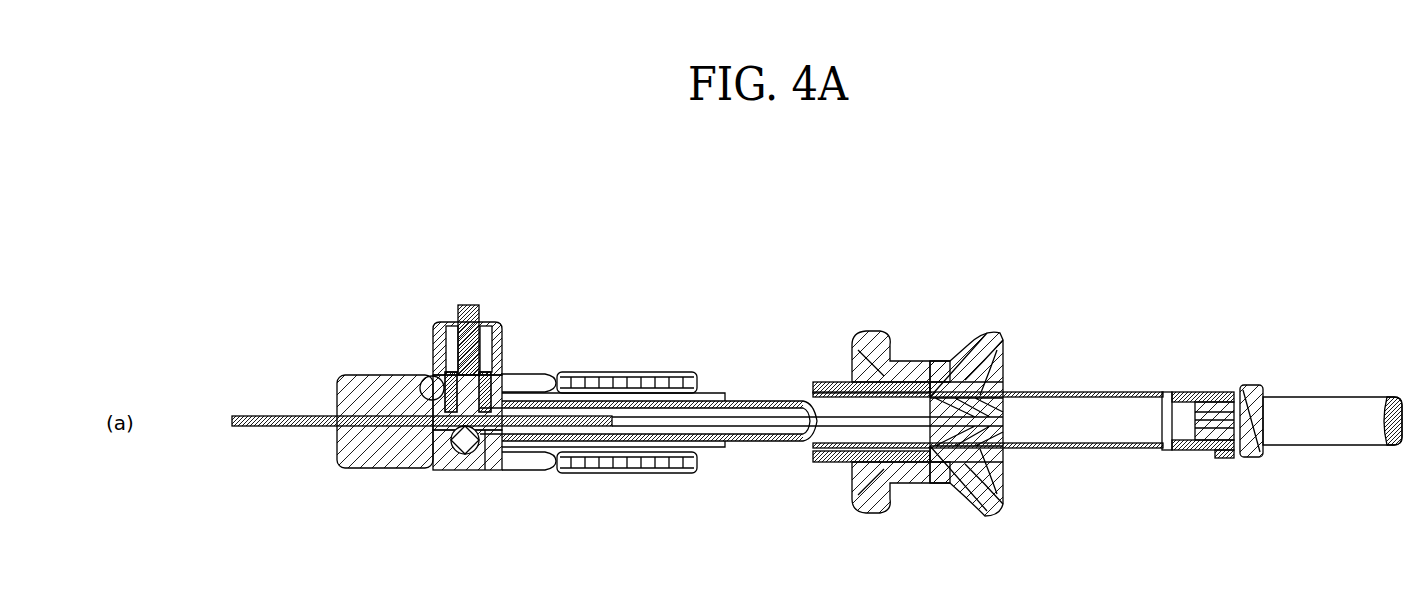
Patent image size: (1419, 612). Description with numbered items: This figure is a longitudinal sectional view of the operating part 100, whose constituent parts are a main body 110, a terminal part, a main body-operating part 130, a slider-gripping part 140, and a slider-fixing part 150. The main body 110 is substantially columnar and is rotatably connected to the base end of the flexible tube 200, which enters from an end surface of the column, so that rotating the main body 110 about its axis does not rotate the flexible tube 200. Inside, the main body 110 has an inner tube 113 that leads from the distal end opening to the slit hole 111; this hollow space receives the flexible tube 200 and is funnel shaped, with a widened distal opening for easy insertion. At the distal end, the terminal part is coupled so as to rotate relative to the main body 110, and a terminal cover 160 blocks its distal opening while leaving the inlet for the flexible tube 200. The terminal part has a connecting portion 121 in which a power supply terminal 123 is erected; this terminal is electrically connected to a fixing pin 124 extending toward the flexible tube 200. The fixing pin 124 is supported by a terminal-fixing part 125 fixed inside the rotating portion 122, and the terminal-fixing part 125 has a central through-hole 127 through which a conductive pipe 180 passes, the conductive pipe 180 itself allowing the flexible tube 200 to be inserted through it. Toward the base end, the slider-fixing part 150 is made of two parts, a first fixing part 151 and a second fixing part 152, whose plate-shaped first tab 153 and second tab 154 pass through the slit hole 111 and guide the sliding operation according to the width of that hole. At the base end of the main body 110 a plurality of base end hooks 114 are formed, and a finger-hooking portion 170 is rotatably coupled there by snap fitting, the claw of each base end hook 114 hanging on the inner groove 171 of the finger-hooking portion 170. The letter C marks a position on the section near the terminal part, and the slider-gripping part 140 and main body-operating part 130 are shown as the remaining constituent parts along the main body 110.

The operating part 100 is at (229, 226).
The main body 110 is at (723, 393).
The slit hole 111 is at (1135, 394).
The inner tube 113 is at (637, 473).
The base end hook 114 is at (1236, 390).
The connecting portion 121 is at (440, 322).
The rotating portion 122 is at (540, 372).
The power supply terminal 123 is at (483, 322).
The fixing pin 124 is at (518, 365).
The terminal-fixing part 125 is at (434, 470).
The through-hole 127 is at (404, 376).
The main body-operating part 130 is at (651, 372).
The slider-gripping part 140 is at (878, 330).
The slider-fixing part 150 is at (1034, 425).
The first fixing part 151 is at (1005, 358).
The second fixing part 152 is at (1005, 498).
The first tab 153 is at (1012, 372).
The second tab 154 is at (1012, 470).
The terminal cover 160 is at (370, 375).
The finger-hooking portion 170 is at (1313, 397).
The inner groove 171 is at (1238, 457).
The conductive pipe 180 is at (466, 470).
The flexible tube 200 is at (275, 430).
The center point C is at (485, 470).